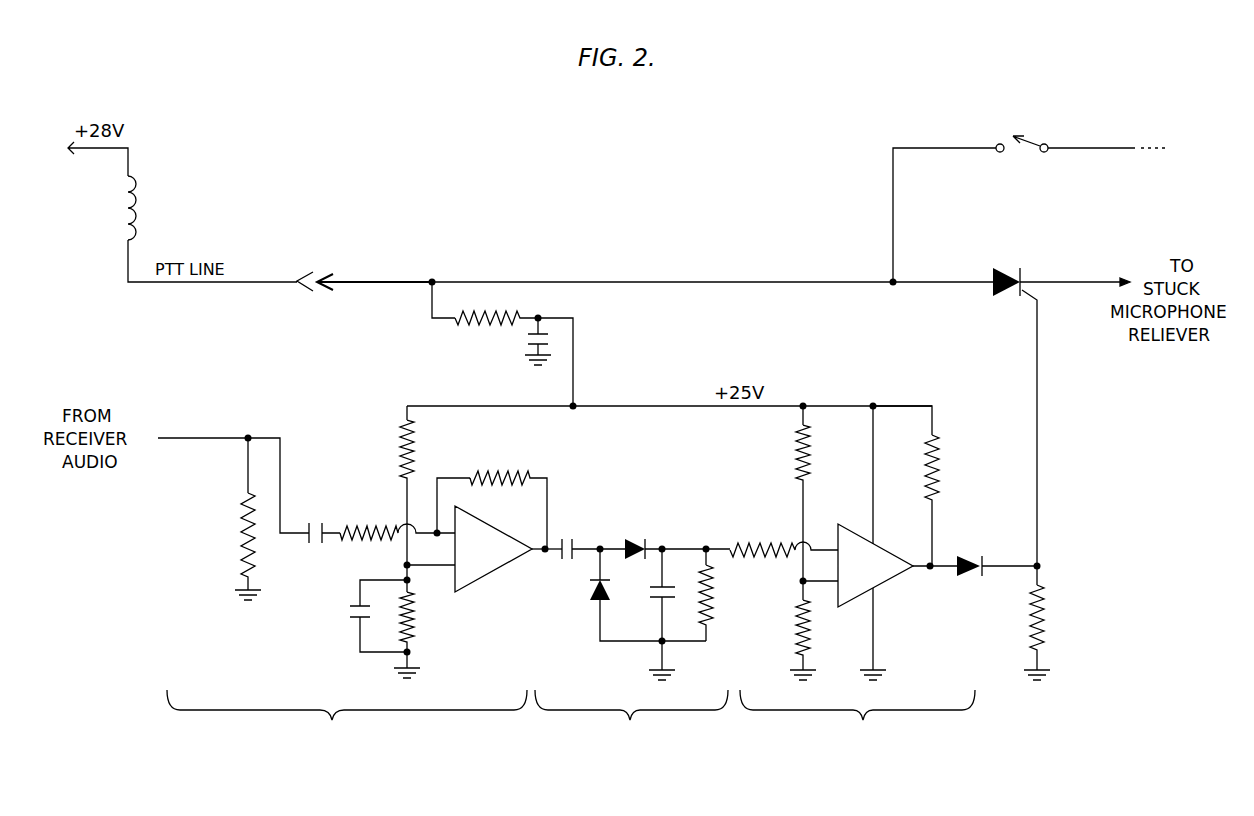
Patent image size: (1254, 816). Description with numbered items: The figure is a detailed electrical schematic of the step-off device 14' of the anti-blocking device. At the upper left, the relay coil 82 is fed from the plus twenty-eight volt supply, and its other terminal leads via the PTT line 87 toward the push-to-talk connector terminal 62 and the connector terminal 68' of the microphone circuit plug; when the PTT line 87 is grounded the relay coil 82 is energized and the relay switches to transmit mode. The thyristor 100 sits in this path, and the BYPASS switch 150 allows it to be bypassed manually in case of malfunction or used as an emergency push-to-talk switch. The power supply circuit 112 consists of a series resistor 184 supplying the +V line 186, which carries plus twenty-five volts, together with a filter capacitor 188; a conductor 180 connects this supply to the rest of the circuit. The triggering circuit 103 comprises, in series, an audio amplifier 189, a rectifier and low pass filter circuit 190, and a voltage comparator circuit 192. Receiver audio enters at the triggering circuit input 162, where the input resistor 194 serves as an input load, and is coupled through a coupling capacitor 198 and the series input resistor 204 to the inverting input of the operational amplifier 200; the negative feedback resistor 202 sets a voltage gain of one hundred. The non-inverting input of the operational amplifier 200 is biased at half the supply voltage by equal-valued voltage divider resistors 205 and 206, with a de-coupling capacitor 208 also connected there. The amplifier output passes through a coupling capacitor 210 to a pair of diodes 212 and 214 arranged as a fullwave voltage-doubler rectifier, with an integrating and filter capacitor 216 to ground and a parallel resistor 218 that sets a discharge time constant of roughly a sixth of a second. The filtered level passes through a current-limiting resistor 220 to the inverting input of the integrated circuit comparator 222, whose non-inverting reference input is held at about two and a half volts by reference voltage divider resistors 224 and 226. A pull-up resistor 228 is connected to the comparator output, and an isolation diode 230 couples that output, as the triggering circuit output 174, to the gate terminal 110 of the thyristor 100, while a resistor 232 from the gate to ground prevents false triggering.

The step-off device 14' is at (661, 210).
The relay coil 82 is at (143, 200).
The PTT line 87 is at (150, 298).
The push-to-talk connector terminal 62 is at (305, 291).
The connector terminal of the microphone circuit plug 68' is at (374, 262).
The BYPASS switch 150 is at (1050, 112).
The thyristor (SCR) 100 is at (990, 278).
The gate terminal 110 is at (1028, 302).
The series resistor 184 is at (462, 322).
The filter capacitor 188 is at (525, 350).
The supply conductor 180 is at (574, 356).
The power supply circuit 112 is at (700, 339).
The +V line 186 is at (641, 405).
The triggering circuit input 162 is at (203, 435).
The input resistor 194 is at (243, 524).
The coupling capacitor 198 is at (327, 522).
The series input resistor 204 is at (355, 528).
The voltage divider resistor 205 is at (400, 438).
The negative feedback resistor 202 is at (512, 475).
The operational amplifier 200 is at (510, 558).
The voltage divider resistor 206 is at (414, 640).
The de-coupling capacitor 208 is at (352, 624).
The coupling capacitor 210 is at (582, 538).
The diode 212 is at (640, 538).
The diode 214 is at (596, 602).
The integrating and filter capacitor 216 is at (657, 603).
The resistor 218 is at (711, 618).
The current-limiting resistor 220 is at (756, 545).
The reference voltage divider resistor 224 is at (798, 452).
The reference voltage divider resistor 226 is at (795, 642).
The integrated circuit comparator 222 is at (895, 572).
The pull-up resistor 228 is at (940, 462).
The isolation diode 230 is at (968, 576).
The resistor 232 is at (1043, 614).
The triggering circuit output 174 is at (1038, 507).
The triggering circuit 103 is at (963, 405).
The audio amplifier 189 is at (338, 722).
The rectifier and low pass filter circuit 190 is at (636, 722).
The voltage comparator circuit 192 is at (869, 722).